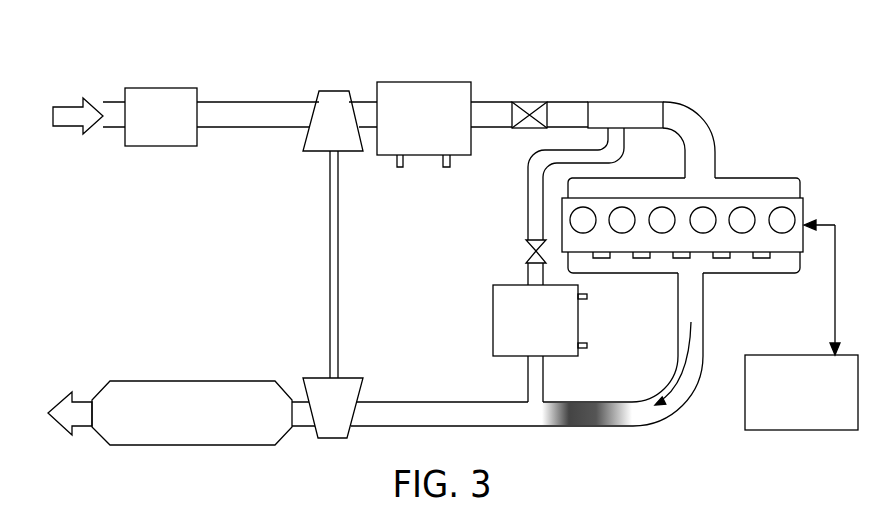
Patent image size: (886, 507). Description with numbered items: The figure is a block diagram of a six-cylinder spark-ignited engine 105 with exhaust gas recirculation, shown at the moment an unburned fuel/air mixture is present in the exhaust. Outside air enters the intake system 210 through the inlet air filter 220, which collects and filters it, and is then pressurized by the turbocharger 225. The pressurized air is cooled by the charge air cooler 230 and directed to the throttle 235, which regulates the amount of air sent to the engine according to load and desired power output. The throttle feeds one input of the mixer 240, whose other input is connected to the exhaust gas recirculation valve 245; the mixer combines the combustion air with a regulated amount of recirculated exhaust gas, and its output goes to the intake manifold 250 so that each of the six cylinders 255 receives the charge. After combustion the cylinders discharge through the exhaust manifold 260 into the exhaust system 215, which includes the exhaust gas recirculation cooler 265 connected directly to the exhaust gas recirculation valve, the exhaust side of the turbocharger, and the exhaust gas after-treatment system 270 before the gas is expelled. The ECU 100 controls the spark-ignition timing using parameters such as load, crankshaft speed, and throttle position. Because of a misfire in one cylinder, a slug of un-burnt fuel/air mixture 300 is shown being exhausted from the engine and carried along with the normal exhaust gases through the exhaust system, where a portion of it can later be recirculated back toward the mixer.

The ECU 100 is at (835, 432).
The engine 105 is at (687, 223).
The intake system 210 is at (103, 100).
The exhaust system 215 is at (58, 397).
The inlet air filter 220 is at (176, 88).
The turbocharger 225 is at (323, 91).
The charge air cooler 230 is at (404, 82).
The throttle 235 is at (525, 128).
The mixer 240 is at (640, 102).
The exhaust gas recirculation valve 245 is at (528, 244).
The intake manifold 250 is at (733, 178).
The cylinders 255 is at (628, 233).
The exhaust manifold 260 is at (746, 273).
The exhaust gas recirculation cooler 265 is at (493, 294).
The exhaust gas after-treatment system 270 is at (145, 381).
The slug of un-burnt fuel/air mixture 300 is at (606, 412).